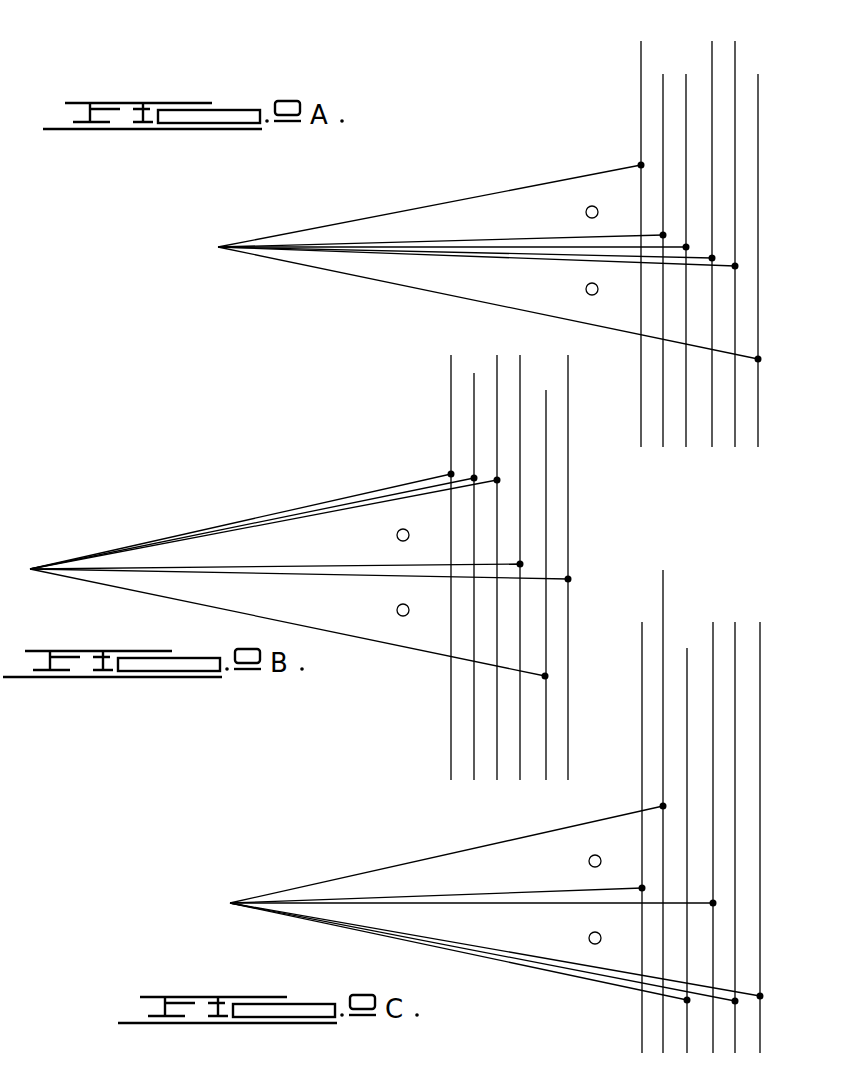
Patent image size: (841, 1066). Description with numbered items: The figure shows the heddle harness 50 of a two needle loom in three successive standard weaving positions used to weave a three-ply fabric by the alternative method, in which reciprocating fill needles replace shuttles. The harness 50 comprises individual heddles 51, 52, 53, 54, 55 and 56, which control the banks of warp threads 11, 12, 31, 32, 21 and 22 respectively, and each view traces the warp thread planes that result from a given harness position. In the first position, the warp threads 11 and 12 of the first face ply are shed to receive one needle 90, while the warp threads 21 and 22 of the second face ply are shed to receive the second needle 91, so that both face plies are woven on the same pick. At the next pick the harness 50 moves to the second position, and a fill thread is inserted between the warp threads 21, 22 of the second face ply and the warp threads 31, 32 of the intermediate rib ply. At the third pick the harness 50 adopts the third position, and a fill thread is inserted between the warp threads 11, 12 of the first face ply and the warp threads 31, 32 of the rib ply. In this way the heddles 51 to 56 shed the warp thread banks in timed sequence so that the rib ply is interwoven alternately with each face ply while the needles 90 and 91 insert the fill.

In FIG. 9A, the warp threads 11 is at (533, 185).
In FIG. 9B, the warp threads 11 is at (327, 501).
In FIG. 9C, the warp threads 11 is at (465, 890).
In FIG. 9A, the warp threads 12 is at (600, 237).
In FIG. 9B, the warp threads 12 is at (348, 502).
In FIG. 9C, the warp threads 12 is at (590, 820).
In FIG. 9A, the warp threads 21 is at (473, 262).
In FIG. 9B, the warp threads 21 is at (243, 613).
In FIG. 9C, the warp threads 21 is at (520, 962).
In FIG. 9A, the warp threads 22 is at (387, 284).
In FIG. 9B, the warp threads 22 is at (294, 576).
In FIG. 9C, the warp threads 22 is at (557, 965).
In FIG. 9A, the warp threads 31 is at (512, 247).
In FIG. 9B, the warp threads 31 is at (408, 498).
In FIG. 9C, the warp threads 31 is at (473, 957).
In FIG. 9A, the warp threads 32 is at (465, 251).
In FIG. 9B, the warp threads 32 is at (283, 566).
In FIG. 9C, the warp threads 32 is at (450, 903).
In FIG. 9A, the heddle harness 50 is at (767, 41).
In FIG. 9A, the heddle 51 is at (641, 73).
In FIG. 9B, the heddle 51 is at (451, 360).
In FIG. 9C, the heddle 51 is at (642, 626).
In FIG. 9A, the heddle 52 is at (663, 82).
In FIG. 9B, the heddle 52 is at (474, 374).
In FIG. 9C, the heddle 52 is at (663, 638).
In FIG. 9A, the heddle 53 is at (686, 100).
In FIG. 9B, the heddle 53 is at (497, 388).
In FIG. 9C, the heddle 53 is at (687, 655).
In FIG. 9A, the heddle 54 is at (712, 128).
In FIG. 9B, the heddle 54 is at (520, 407).
In FIG. 9C, the heddle 54 is at (713, 687).
In FIG. 9A, the heddle 55 is at (735, 143).
In FIG. 9B, the heddle 55 is at (546, 446).
In FIG. 9C, the heddle 55 is at (735, 705).
In FIG. 9A, the heddle 56 is at (758, 165).
In FIG. 9B, the heddle 56 is at (568, 396).
In FIG. 9C, the heddle 56 is at (760, 727).
In FIG. 9A, the needle 90 is at (586, 212).
In FIG. 9B, the needle 90 is at (397, 535).
In FIG. 9C, the needle 90 is at (589, 861).
In FIG. 9A, the needle 91 is at (586, 289).
In FIG. 9B, the needle 91 is at (397, 608).
In FIG. 9C, the needle 91 is at (589, 937).